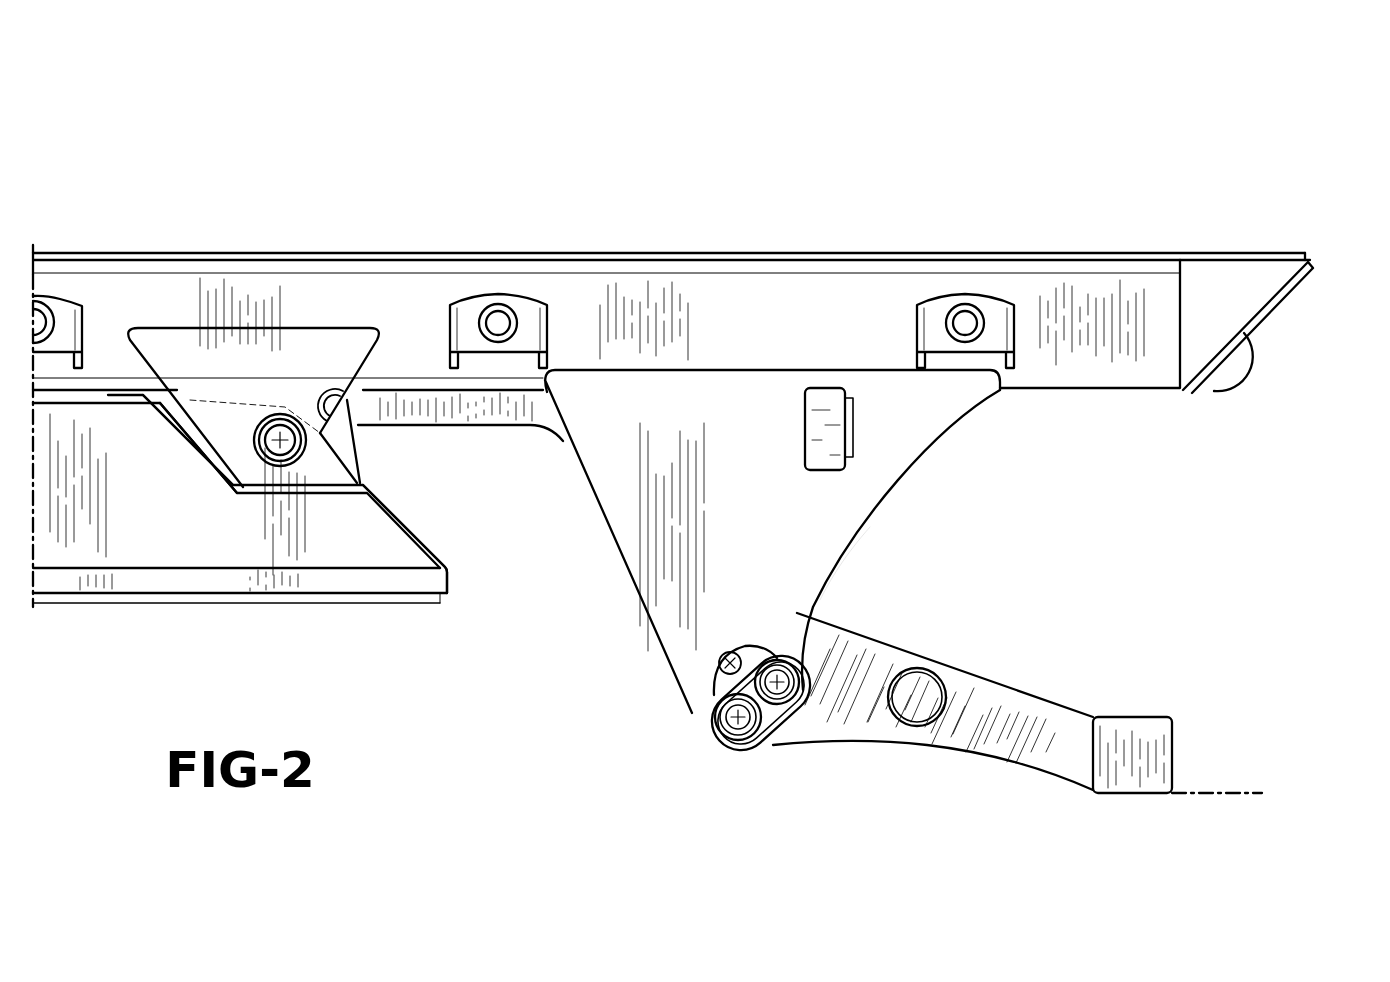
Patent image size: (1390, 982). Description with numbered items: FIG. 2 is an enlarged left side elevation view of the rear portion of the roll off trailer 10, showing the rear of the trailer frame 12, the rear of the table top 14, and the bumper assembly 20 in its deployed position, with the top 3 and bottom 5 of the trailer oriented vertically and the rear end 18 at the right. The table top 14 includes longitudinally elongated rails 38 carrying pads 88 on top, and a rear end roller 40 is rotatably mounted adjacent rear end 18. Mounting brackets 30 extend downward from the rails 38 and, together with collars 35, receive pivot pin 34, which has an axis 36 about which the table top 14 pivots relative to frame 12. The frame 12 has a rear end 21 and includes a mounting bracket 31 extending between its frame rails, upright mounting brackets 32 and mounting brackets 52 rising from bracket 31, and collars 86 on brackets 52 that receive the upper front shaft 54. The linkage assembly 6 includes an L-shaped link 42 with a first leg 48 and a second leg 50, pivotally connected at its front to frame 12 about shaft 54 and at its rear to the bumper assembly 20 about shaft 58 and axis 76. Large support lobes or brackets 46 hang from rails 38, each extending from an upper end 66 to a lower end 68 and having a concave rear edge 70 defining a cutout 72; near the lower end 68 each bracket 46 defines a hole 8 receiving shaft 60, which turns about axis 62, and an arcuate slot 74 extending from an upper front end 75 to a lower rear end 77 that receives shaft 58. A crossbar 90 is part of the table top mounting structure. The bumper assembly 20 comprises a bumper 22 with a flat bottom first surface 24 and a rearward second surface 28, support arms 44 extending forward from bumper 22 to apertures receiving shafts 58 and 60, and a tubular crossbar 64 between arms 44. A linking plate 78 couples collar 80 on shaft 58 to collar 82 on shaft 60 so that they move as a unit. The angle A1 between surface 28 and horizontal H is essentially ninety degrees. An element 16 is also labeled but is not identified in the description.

The top 3 is at (118, 72).
The bottom 5 is at (885, 300).
The linkage assembly 6 is at (565, 883).
The aperture or hole 8 is at (718, 706).
The roll off trailer 10 is at (343, 235).
The trailer frame 12 is at (175, 608).
The table top 14 is at (128, 262).
The fastener 16 is at (293, 416).
The rear end 18 is at (1328, 300).
The bumper assembly 20 is at (1040, 597).
The rear end of frame 21 is at (450, 580).
The bumper 22 is at (1130, 717).
The first surface 24 is at (1133, 797).
The second surface 28 is at (1177, 732).
The mounting brackets 30 is at (190, 345).
The mounting bracket 31 is at (205, 460).
The mounting brackets 32 is at (197, 428).
The pivot pin 34 is at (273, 448).
The sleeves or collars 35 is at (253, 442).
The axis 36 is at (295, 450).
The rails 38 is at (575, 292).
The rear end roller 40 is at (1233, 378).
The link 42 is at (512, 432).
The support arms 44 is at (1045, 710).
The support lobes or bumper assembly mounting brackets 46 is at (643, 497).
The first leg 48 is at (480, 415).
The second leg 50 is at (723, 668).
The mounting brackets 52 is at (348, 445).
The upper front shaft 54 is at (330, 412).
The lower rear shaft 58 is at (812, 665).
The shaft 60 is at (718, 697).
The axis 62 is at (727, 740).
The crossbar 64 is at (932, 668).
The top or upper end 66 is at (793, 368).
The bottom or lower end 68 is at (737, 752).
The rear edge 70 is at (845, 495).
The cutout or space 72 is at (840, 523).
The slot 74 is at (737, 650).
The first or upper front end 75 is at (720, 677).
The axis 76 is at (805, 702).
The second or lower rear end 77 is at (812, 697).
The links or linking plates 78 is at (773, 718).
The collars 80 is at (807, 686).
The collars 82 is at (723, 722).
The collars 86 is at (350, 403).
The pads 88 is at (693, 252).
The crossbar 90 is at (800, 442).
The angle A1 is at (1172, 745).
The horizontal H is at (1250, 793).